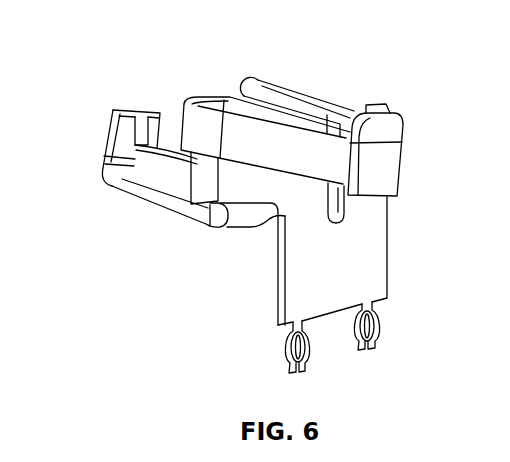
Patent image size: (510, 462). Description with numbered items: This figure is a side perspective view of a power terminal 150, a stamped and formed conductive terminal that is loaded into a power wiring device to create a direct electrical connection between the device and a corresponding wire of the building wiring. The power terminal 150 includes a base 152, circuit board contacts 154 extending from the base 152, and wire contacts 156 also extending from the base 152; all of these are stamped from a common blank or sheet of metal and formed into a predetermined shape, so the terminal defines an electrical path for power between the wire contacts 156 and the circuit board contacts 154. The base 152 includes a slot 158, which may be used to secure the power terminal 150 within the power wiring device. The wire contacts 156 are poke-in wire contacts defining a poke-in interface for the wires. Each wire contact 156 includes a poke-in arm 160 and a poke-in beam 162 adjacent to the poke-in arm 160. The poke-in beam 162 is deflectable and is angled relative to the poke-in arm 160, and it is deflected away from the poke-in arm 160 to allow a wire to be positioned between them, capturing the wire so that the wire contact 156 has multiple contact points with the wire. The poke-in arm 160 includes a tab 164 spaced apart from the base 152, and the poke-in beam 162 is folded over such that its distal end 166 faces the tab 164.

The power terminal 150 is at (215, 37).
The base 152 is at (367, 270).
The circuit board contacts 154 is at (380, 335).
The wire contacts 156 is at (147, 186).
The slot 158 is at (346, 219).
The poke-in arm 160 is at (333, 155).
The poke-in beam 162 is at (355, 107).
The tab 164 is at (115, 125).
The distal end 166 is at (142, 117).